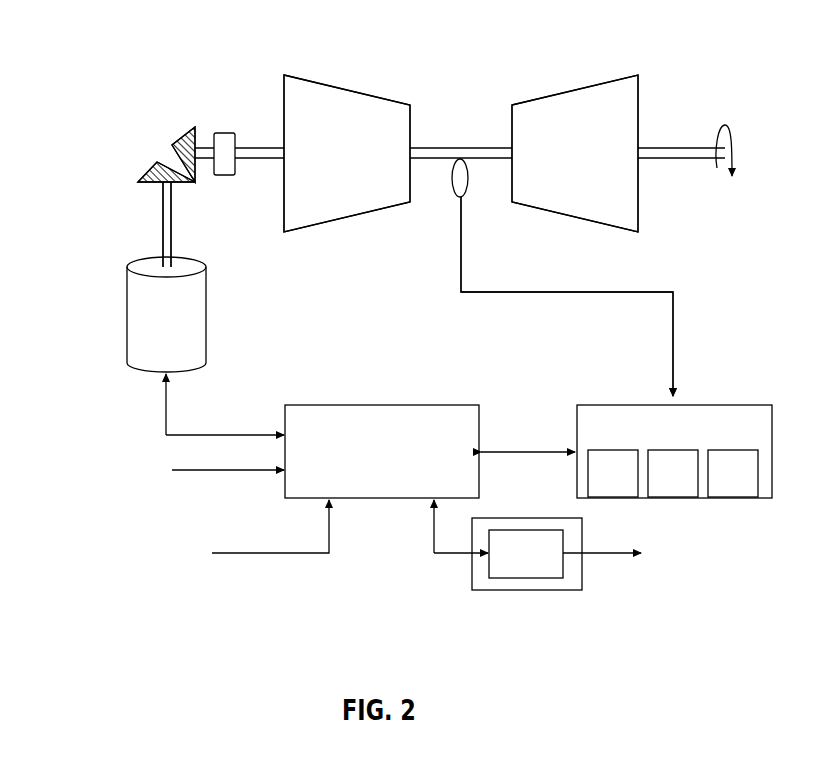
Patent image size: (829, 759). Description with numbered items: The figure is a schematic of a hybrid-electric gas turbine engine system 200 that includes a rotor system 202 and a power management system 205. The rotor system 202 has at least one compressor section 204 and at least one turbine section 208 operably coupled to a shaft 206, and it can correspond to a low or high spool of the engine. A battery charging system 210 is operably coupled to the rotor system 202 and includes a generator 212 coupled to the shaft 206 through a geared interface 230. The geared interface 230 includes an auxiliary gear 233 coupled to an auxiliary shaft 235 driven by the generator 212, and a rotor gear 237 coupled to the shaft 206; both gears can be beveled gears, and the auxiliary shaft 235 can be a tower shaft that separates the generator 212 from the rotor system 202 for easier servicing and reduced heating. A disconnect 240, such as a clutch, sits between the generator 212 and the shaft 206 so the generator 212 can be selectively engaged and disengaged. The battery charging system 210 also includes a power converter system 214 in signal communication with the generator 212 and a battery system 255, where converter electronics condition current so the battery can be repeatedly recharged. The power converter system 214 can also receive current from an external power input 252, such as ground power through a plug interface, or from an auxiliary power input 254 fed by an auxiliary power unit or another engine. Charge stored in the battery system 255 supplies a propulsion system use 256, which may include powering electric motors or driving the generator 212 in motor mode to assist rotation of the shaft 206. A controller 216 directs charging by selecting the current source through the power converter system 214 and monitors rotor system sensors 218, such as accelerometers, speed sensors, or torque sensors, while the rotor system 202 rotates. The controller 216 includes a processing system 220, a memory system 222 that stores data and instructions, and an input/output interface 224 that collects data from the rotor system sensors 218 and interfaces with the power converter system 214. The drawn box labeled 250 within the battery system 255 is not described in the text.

The hybrid-electric gas turbine engine system 200 is at (103, 46).
The rotor system 202 is at (504, 69).
The compressor section 204 is at (347, 90).
The power management system 205 is at (725, 270).
The shaft 206 is at (265, 147).
The turbine section 208 is at (581, 88).
The battery charging system 210 is at (125, 386).
The generator 212 is at (127, 315).
The power converter system 214 is at (397, 466).
The controller 216 is at (690, 441).
The rotor system sensors 218 is at (458, 199).
The processing system 220 is at (629, 483).
The memory system 222 is at (689, 483).
The input/output interface 224 is at (749, 483).
The geared interface 230 is at (123, 140).
The auxiliary gear 233 is at (151, 172).
The auxiliary shaft 235 is at (163, 230).
The rotor gear 237 is at (182, 137).
The disconnect 240 is at (226, 176).
The memory 250 is at (544, 566).
The power input 252 is at (250, 555).
The auxiliary power input 254 is at (220, 472).
The battery system 255 is at (563, 518).
The propulsion system use 256 is at (612, 556).